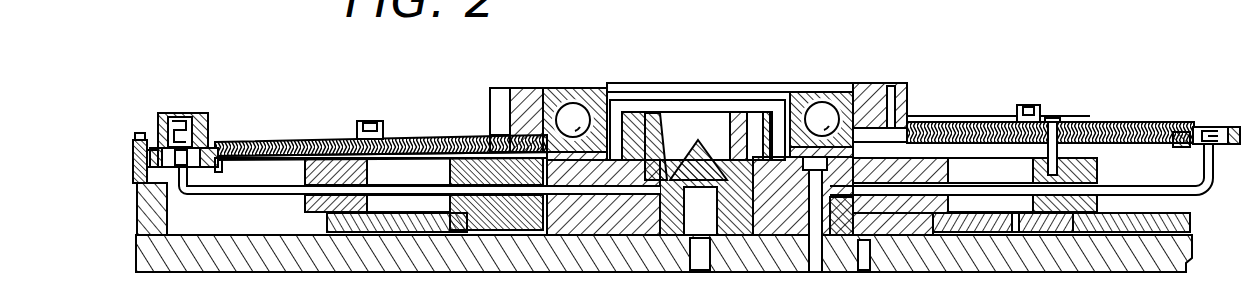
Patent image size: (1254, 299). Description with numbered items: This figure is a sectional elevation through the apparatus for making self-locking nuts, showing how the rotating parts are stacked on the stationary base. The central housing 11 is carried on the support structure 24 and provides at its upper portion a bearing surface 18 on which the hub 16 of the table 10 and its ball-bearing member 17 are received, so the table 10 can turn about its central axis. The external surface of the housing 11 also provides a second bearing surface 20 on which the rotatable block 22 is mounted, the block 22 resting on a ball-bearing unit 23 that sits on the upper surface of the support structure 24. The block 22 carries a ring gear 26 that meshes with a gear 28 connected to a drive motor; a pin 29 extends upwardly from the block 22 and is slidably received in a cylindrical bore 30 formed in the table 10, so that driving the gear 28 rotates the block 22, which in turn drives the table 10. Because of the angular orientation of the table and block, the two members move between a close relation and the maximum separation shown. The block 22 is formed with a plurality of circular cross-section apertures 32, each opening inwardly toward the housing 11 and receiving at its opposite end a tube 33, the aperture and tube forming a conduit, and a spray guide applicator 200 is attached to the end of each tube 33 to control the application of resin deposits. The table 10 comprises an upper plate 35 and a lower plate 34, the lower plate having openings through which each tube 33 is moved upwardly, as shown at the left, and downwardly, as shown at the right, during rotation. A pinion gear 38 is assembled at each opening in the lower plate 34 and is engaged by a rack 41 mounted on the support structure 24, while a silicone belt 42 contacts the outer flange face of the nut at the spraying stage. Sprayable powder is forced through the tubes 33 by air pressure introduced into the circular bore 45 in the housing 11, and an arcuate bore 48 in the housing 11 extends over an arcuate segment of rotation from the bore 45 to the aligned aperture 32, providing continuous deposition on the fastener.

The table 10 is at (252, 139).
The central housing 11 is at (655, 134).
The hub 16 is at (865, 86).
The ball-bearing member 17 is at (805, 92).
The bearing surface 18 is at (588, 100).
The second bearing surface 20 is at (900, 163).
The rotatable block 22 is at (1077, 163).
The ball-bearing unit 23 is at (863, 248).
The support structure 24 is at (1191, 241).
The ring gear 26 is at (1015, 218).
The gear 28 is at (1190, 218).
The pin 29 is at (1040, 150).
The cylindrical bore 30 is at (1054, 123).
The circular cross-section aperture 32 is at (443, 175).
The tube 33 is at (260, 195).
The lower plate 34 is at (283, 148).
The upper plate 35 is at (262, 190).
The pinion gear 38 is at (225, 168).
The rack 41 is at (132, 176).
The silicone belt 42 is at (150, 133).
The circular bore 45 is at (708, 225).
The arcuate bore 48 is at (632, 190).
The spray guide applicator 200 is at (187, 120).